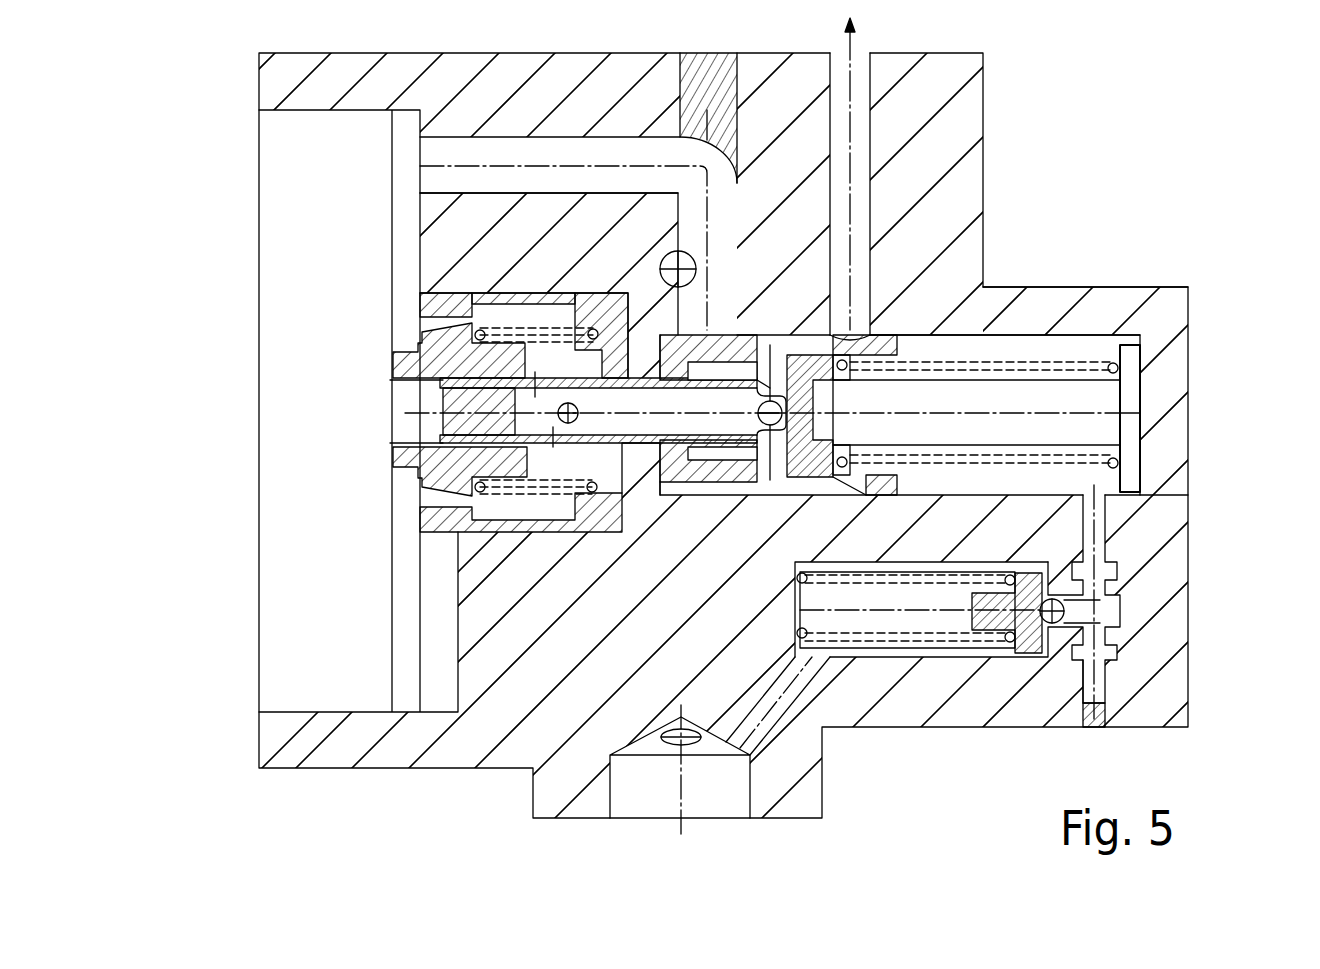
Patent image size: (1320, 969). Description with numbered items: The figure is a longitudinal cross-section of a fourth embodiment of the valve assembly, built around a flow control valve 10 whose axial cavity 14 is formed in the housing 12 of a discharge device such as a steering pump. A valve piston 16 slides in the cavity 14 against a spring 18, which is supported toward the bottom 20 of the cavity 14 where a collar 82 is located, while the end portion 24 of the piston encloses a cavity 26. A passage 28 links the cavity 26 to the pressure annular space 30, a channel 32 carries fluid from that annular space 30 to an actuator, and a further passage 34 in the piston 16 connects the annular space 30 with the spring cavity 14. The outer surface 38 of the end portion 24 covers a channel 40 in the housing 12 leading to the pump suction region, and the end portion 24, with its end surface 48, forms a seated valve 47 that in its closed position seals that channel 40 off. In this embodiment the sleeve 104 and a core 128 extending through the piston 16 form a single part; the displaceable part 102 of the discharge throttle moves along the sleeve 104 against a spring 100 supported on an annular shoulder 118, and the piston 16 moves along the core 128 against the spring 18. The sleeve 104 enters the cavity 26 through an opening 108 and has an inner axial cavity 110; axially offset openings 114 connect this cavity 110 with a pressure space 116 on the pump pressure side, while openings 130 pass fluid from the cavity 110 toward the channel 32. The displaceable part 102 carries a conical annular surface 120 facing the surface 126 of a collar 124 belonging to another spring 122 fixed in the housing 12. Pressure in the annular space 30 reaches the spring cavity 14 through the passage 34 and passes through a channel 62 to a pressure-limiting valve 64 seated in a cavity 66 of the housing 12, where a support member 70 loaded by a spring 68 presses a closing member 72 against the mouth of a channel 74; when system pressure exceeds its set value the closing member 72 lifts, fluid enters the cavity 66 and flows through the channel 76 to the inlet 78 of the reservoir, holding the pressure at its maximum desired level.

The flow control valve 10 is at (1138, 171).
The housing 12 is at (1162, 318).
The axial cavity 14 is at (1078, 358).
The valve piston 16 is at (873, 333).
The spring 18 is at (1113, 368).
The bottom of the cavity 20 is at (1140, 346).
The end portion 24 is at (757, 333).
The cavity 26 is at (718, 445).
The passage 28 is at (772, 447).
The pressure annular space 30 is at (833, 333).
The channel 32 is at (865, 127).
The passage 34 is at (860, 492).
The outer surface 38 is at (738, 333).
The channel 40 is at (512, 155).
The seated valve 47 is at (663, 378).
The end surface 48 is at (650, 335).
The channel 62 is at (1108, 535).
The pressure-limiting valve 64 is at (1150, 645).
The cavity 66 is at (915, 650).
The spring 68 is at (1010, 638).
The support member 70 is at (1030, 650).
The closing member 72 is at (1060, 626).
The channel 74 is at (1108, 693).
The channel 76 is at (822, 742).
The inlet of the reservoir 78 is at (728, 812).
The collar 82 is at (1130, 405).
The spring 100 is at (480, 330).
The displaceable part 102 is at (387, 375).
The sleeve 104 is at (387, 442).
The opening 108 is at (682, 450).
The inner axial cavity 110 is at (640, 420).
The openings 114 is at (553, 445).
The pressure space 116 is at (528, 507).
The annular shoulder 118 is at (425, 472).
The conical annular surface 120 is at (418, 485).
The spring 122 is at (522, 307).
The collar 124 is at (427, 305).
The surface 126 is at (420, 335).
The core 128 is at (972, 425).
The openings 130 is at (758, 445).